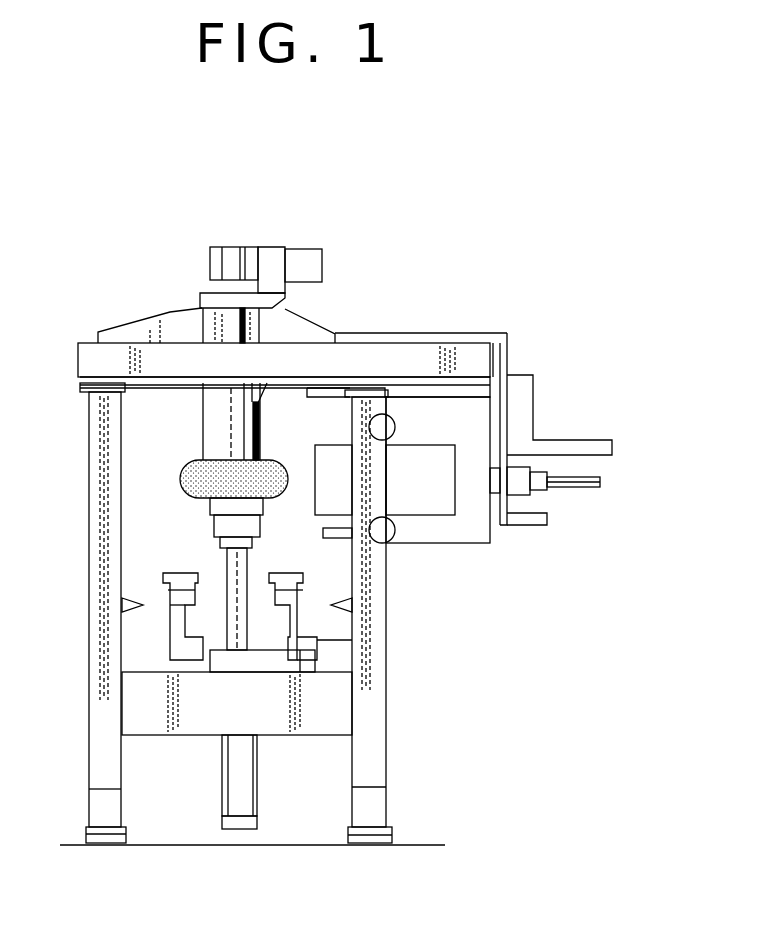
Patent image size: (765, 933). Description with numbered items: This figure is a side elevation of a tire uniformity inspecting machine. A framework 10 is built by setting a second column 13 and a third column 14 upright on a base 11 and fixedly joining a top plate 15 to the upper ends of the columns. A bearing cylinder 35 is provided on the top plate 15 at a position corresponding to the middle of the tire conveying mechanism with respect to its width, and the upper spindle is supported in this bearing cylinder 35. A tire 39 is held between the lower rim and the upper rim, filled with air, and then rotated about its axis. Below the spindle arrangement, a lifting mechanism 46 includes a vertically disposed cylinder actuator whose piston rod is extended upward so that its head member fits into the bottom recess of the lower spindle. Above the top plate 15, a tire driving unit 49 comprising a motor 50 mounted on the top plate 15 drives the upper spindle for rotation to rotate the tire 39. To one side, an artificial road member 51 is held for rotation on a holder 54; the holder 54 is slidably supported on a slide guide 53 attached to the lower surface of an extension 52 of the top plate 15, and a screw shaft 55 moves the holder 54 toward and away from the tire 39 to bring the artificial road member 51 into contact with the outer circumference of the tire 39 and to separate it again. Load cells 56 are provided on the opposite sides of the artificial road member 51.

The framework 10 is at (395, 663).
The base 11 is at (425, 856).
The second column 13 is at (380, 715).
The third column 14 is at (103, 705).
The top plate 15 is at (328, 358).
The bearing cylinder 35 is at (217, 421).
The tire 39 is at (182, 487).
The lifting mechanism 46 is at (243, 782).
The tire driving unit 49 is at (284, 240).
The motor 50 is at (310, 267).
The artificial road member 51 is at (445, 505).
The extension 52 is at (463, 342).
The slide guide 53 is at (467, 377).
The holder 54 is at (465, 413).
The screw shaft 55 is at (577, 487).
The load cells 56 is at (395, 535).